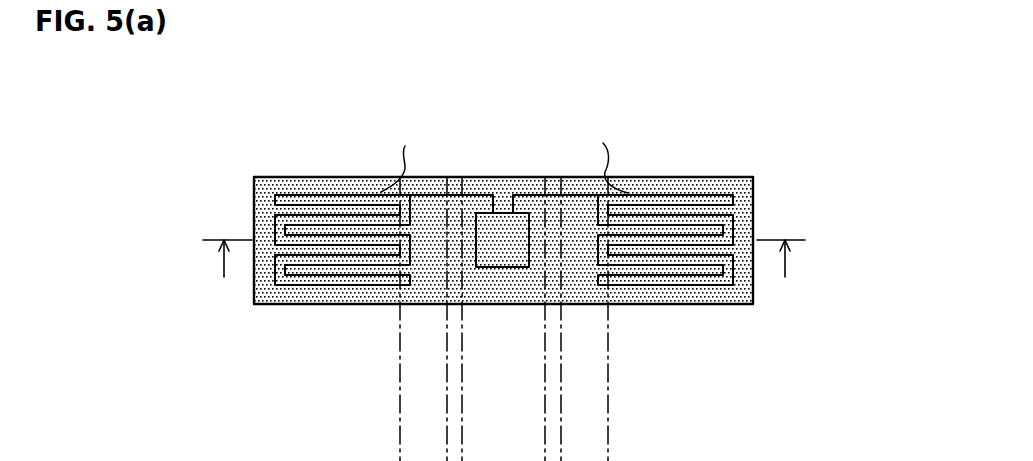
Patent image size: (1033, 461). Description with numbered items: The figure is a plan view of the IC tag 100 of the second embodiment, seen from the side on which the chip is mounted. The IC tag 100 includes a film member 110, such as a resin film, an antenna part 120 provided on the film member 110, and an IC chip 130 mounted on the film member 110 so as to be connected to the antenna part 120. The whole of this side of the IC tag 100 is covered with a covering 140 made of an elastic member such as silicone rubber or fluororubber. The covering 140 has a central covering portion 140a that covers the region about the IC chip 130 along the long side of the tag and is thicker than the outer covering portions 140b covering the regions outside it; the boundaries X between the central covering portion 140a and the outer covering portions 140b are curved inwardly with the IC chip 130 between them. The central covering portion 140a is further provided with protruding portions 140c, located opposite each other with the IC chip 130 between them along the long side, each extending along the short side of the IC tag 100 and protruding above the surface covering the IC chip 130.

The IC tag 100 is at (395, 98).
The film member 110 is at (662, 178).
The antenna part 120 is at (680, 290).
The IC chip 130 is at (510, 230).
The covering 140 is at (490, 240).
The central covering portion 140a is at (477, 203).
The outer covering portions 140b is at (340, 262).
The protruding portions 140c is at (547, 270).